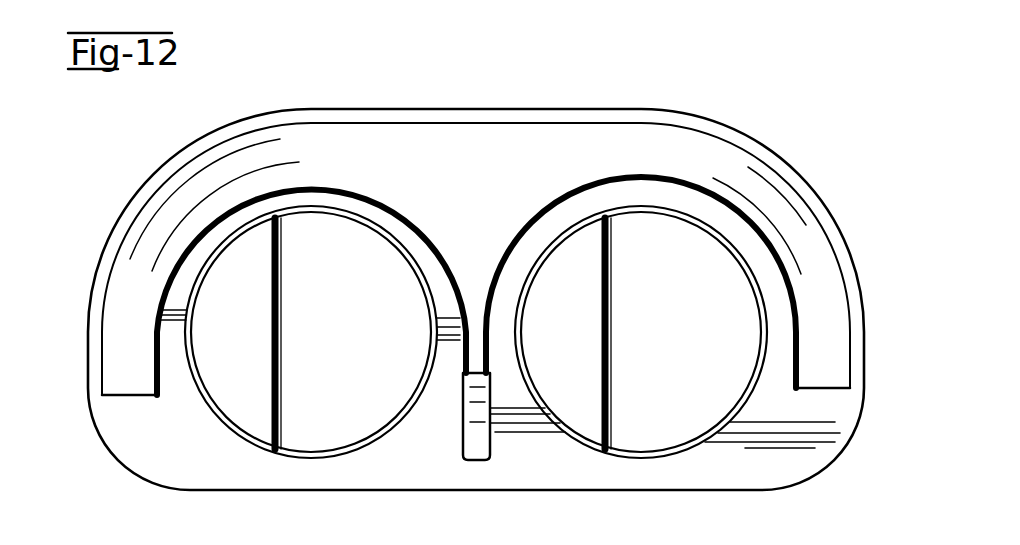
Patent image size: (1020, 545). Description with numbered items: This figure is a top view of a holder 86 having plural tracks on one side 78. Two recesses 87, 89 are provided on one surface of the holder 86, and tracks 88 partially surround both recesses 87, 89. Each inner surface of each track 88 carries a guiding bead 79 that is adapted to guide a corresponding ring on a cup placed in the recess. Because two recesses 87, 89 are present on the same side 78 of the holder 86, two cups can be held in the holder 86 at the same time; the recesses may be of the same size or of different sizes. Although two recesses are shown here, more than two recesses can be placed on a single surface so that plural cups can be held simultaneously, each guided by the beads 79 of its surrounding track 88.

The side 78 is at (706, 204).
The guiding bead 79 is at (152, 334).
The holder 86 is at (870, 360).
The recess 87 is at (666, 396).
The tracks 88 is at (168, 243).
The recess 89 is at (345, 396).